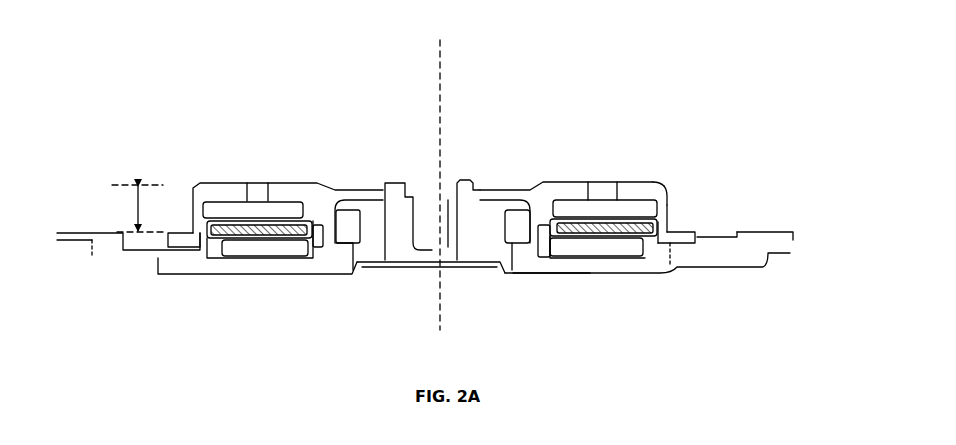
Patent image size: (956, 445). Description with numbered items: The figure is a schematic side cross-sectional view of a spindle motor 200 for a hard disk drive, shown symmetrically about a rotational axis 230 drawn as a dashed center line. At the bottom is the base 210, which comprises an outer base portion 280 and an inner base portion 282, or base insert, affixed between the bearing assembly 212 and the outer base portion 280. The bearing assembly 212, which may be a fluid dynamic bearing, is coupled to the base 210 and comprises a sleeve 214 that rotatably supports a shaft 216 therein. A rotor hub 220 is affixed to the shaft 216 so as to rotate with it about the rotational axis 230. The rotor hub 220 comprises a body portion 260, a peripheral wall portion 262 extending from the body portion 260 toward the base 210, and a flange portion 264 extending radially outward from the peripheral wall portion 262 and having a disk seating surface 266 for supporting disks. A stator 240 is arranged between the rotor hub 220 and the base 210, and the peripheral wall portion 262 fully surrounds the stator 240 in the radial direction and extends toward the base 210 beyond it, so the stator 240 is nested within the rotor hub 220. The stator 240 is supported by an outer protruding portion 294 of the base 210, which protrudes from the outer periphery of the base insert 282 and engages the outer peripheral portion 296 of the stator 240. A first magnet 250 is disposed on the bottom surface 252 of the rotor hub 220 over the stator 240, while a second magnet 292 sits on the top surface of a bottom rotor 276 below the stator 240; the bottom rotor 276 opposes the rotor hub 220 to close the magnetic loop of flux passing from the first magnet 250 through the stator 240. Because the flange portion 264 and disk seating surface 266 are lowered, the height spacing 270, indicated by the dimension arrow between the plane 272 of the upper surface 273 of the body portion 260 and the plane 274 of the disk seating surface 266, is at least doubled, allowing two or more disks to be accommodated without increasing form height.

The spindle motor 200 is at (645, 60).
The base 210 is at (720, 254).
The bearing assembly 212 is at (478, 270).
The sleeve 214 is at (386, 182).
The shaft 216 is at (423, 175).
The rotor hub 220 is at (648, 185).
The rotational axis 230 is at (440, 88).
The stator 240 is at (597, 235).
The first magnet 250 is at (635, 200).
The bottom surface 252 is at (662, 192).
The body portion 260 is at (580, 192).
The peripheral wall portion 262 is at (673, 210).
The flange portion 264 is at (680, 237).
The disk seating surface 266 is at (177, 232).
The height spacing 270 is at (137, 210).
The plane 272 is at (127, 185).
The upper surface 273 is at (224, 183).
The plane 274 is at (122, 262).
The bottom rotor 276 is at (565, 246).
The outer base portion 280 is at (150, 260).
The inner base portion 282 is at (204, 258).
The second magnet 292 is at (270, 256).
The outer protruding portion 294 is at (218, 238).
The outer peripheral portion 296 is at (231, 225).